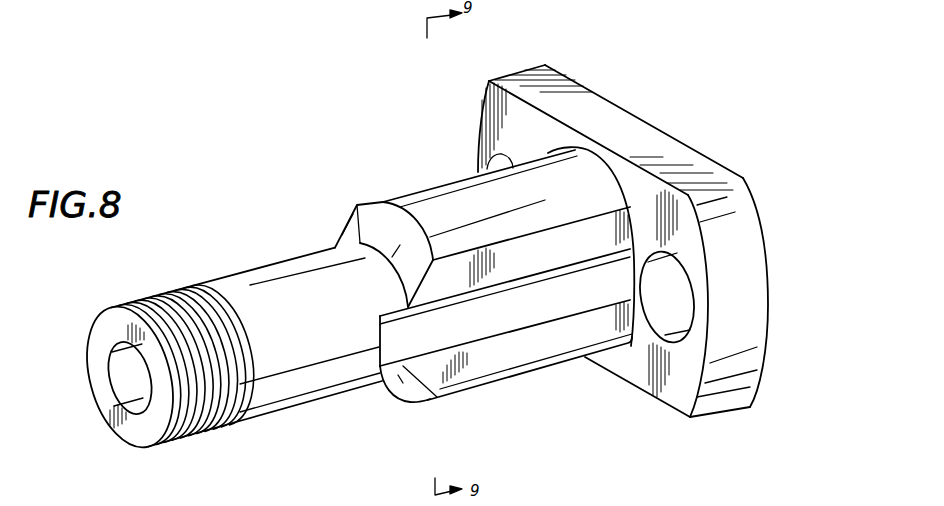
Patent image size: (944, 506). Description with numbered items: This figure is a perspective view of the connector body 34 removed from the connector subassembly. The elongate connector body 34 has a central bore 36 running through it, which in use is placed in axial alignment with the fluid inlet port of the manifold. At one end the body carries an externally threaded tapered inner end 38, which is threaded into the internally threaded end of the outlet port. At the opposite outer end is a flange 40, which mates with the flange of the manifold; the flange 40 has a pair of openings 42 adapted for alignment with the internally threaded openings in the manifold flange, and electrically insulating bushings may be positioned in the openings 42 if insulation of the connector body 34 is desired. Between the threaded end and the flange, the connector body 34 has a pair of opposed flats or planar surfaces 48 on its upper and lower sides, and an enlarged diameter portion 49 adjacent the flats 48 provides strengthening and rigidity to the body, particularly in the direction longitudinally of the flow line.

The connector body 34 is at (347, 422).
The central bore 36 is at (127, 387).
The externally threaded tapered inner end 38 is at (171, 292).
The flange 40 is at (742, 238).
The openings 42 is at (668, 325).
The flats 48 is at (508, 358).
The enlarged diameter portion 49 is at (365, 218).